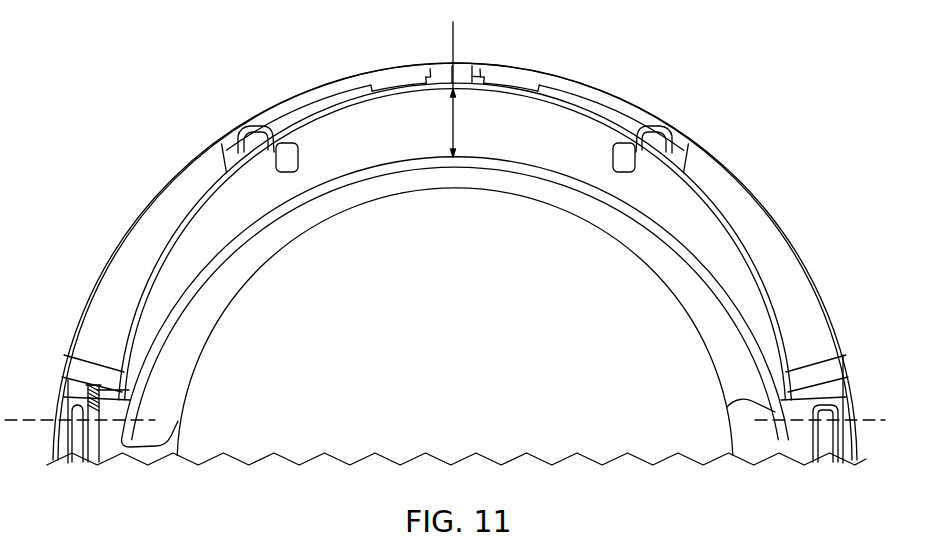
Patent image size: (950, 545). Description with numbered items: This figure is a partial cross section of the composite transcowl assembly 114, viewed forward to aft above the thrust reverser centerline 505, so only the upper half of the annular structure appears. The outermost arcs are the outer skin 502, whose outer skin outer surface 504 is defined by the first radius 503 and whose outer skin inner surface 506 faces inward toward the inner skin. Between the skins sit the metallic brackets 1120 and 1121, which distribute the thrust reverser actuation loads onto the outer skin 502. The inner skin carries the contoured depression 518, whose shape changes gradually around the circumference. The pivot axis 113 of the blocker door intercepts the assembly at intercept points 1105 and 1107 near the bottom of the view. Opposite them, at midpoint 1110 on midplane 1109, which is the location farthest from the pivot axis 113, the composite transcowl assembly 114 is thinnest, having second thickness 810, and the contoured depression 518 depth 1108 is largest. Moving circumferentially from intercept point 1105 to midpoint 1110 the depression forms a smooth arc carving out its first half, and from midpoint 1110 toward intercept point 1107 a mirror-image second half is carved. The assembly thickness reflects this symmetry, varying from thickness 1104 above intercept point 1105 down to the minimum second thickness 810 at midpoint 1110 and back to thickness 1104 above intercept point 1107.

The outer skin 502 is at (188, 163).
The outer skin outer surface 504 is at (348, 78).
The outer skin inner surface 506 is at (150, 214).
The contoured depression 518 is at (419, 145).
The second thickness 810 is at (486, 68).
The composite transcowl assembly 114 is at (732, 170).
The first radius 503 is at (750, 255).
The thickness 1104 is at (103, 354).
The intercept point 1105 is at (178, 421).
The intercept point 1107 is at (726, 407).
The pivot axis 113 is at (37, 424).
The thrust reverser centerline 505 is at (458, 452).
The contoured depression depth 1108 is at (456, 122).
The midplane 1109 is at (455, 33).
The midpoint 1110 is at (453, 62).
The metallic bracket 1120 is at (290, 109).
The metallic bracket 1121 is at (632, 111).